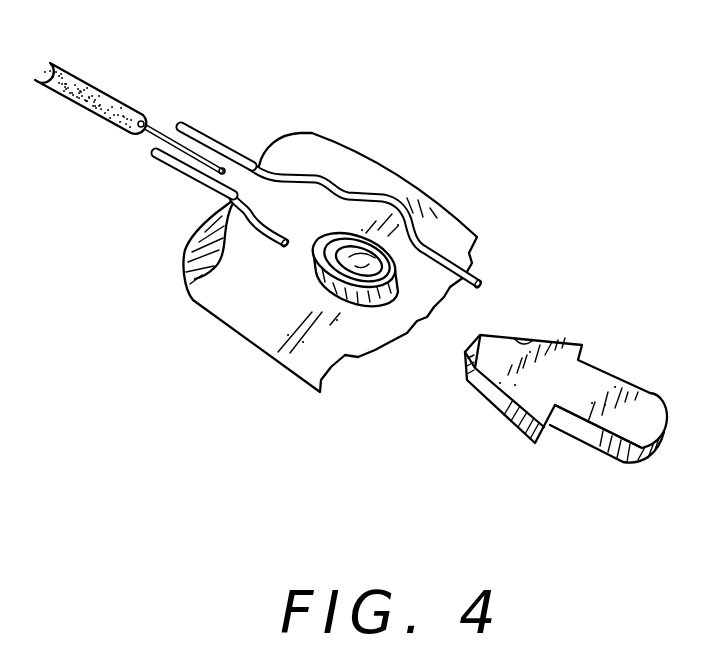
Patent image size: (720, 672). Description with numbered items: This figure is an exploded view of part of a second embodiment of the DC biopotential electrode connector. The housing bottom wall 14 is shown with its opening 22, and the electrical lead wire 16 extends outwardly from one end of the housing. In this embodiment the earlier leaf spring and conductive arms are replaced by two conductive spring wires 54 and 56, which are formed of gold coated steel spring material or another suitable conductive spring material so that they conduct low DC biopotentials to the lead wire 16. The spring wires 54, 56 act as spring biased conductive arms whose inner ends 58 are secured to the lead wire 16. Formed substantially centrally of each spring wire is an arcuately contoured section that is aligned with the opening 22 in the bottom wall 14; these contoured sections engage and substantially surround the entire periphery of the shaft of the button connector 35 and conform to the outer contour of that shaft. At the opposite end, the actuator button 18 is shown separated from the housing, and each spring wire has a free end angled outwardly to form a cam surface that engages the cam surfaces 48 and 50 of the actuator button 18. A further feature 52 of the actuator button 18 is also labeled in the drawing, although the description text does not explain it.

The bottom wall 14 is at (307, 365).
The electrical lead wire 16 is at (121, 99).
The actuator button 18 is at (633, 432).
The opening 22 is at (317, 262).
The button connector 35 is at (363, 262).
The cam surface 48 is at (527, 338).
The cam surface 50 is at (505, 403).
The clip tip 52 is at (480, 332).
The conductive spring wire 54 is at (291, 170).
The conductive spring wire 56 is at (187, 277).
The inner ends 58 is at (205, 131).